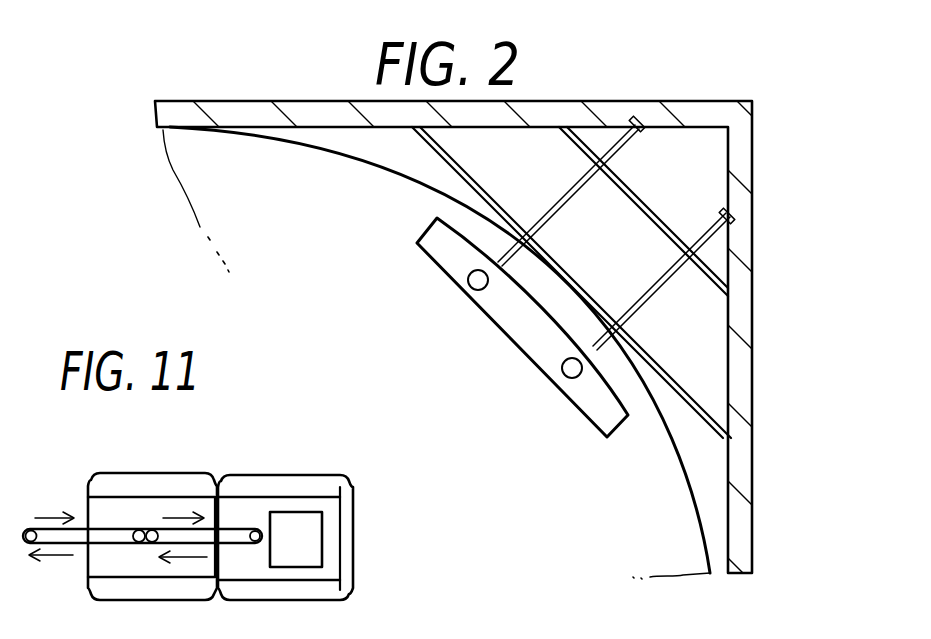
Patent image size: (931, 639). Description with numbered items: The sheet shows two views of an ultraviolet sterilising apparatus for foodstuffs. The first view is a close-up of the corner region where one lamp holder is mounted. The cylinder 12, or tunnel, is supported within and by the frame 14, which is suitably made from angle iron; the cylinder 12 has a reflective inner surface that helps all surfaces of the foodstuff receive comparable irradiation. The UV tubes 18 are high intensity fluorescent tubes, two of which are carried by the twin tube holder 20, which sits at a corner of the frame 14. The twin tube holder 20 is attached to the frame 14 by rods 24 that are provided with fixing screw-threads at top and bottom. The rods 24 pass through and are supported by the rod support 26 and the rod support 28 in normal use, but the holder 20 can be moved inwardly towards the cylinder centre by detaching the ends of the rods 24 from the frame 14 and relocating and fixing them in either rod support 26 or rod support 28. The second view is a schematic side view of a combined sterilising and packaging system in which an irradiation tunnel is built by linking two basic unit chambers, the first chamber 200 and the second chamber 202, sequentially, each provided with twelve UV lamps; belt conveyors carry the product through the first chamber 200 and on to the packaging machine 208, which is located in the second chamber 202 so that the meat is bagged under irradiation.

In FIG. 2, the cylinder 12 is at (683, 470).
In FIG. 2, the frame 14 is at (750, 221).
In FIG. 2, the UV tubes 18 is at (478, 291).
In FIG. 2, the twin tube holder 20 is at (416, 241).
In FIG. 2, the rods 24 is at (662, 278).
In FIG. 2, the rod support 26 is at (657, 212).
In FIG. 2, the rod support 28 is at (660, 360).
In FIG. 11, the first chamber 200 is at (154, 468).
In FIG. 11, the second chamber 202 is at (289, 471).
In FIG. 11, the packaging machine 208 is at (315, 535).